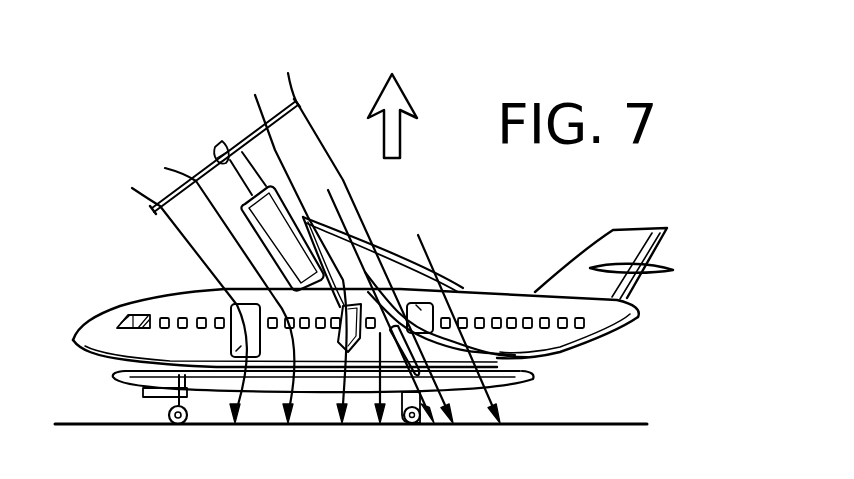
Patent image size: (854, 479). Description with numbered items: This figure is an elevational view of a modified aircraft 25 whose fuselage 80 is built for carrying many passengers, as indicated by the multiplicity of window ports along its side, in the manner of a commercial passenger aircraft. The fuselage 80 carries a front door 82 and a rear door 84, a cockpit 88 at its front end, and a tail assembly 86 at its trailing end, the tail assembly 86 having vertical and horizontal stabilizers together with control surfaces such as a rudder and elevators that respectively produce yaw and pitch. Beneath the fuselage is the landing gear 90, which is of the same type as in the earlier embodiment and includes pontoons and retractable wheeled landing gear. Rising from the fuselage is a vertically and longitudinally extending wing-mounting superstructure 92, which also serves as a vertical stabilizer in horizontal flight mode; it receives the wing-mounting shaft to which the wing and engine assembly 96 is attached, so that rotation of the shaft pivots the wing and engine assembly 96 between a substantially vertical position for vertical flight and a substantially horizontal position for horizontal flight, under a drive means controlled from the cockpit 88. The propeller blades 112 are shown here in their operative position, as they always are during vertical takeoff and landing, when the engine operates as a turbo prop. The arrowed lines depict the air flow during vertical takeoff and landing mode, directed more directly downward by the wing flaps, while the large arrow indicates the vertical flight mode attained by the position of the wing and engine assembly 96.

The aircraft 25 is at (540, 222).
The fuselage 80 is at (490, 291).
The front door 82 is at (227, 368).
The rear door 84 is at (413, 317).
The tail assembly 86 is at (639, 237).
The cockpit 88 is at (117, 316).
The landing gear 90 is at (312, 380).
The wing-mounting superstructure 92 is at (410, 261).
The wing and engine assembly 96 is at (359, 262).
The propeller blades 112 is at (241, 137).